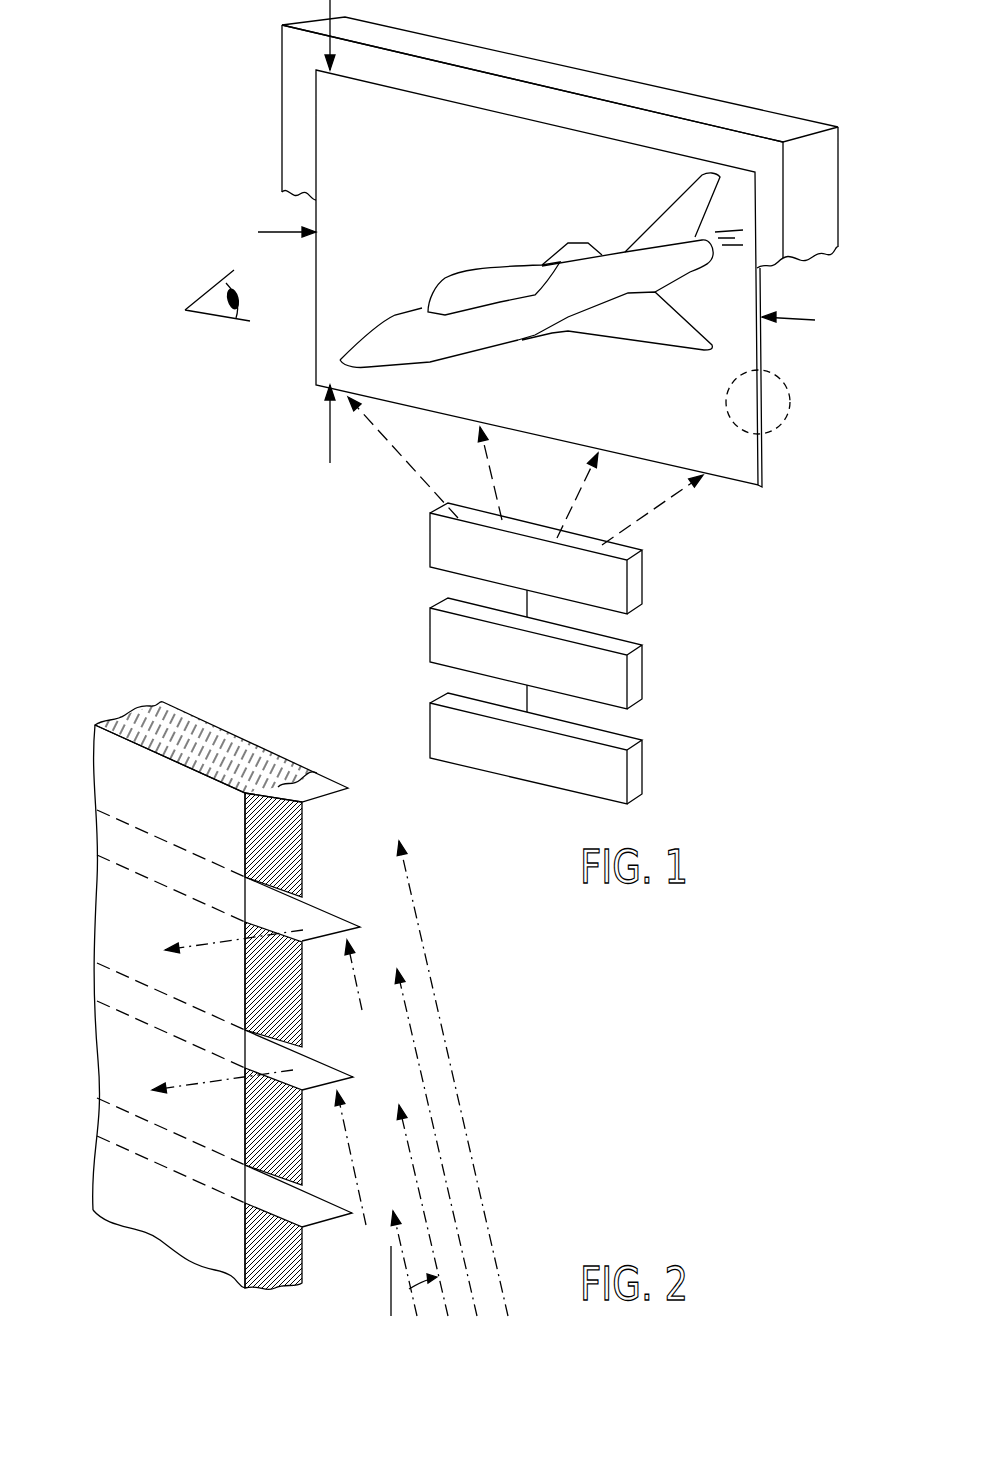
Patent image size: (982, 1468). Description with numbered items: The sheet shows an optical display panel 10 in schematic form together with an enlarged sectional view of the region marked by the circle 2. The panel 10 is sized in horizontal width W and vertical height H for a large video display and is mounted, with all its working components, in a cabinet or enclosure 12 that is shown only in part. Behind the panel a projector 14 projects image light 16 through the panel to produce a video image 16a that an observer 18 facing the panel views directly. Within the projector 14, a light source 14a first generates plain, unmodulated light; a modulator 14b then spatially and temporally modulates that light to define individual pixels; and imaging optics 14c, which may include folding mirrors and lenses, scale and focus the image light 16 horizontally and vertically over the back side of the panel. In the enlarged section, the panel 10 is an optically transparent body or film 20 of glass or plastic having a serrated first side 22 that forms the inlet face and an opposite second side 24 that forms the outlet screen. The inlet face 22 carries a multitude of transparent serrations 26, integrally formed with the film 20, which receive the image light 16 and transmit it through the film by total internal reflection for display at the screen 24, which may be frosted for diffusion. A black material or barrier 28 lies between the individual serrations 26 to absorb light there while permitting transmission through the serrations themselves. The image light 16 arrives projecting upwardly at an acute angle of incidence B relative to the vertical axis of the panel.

In FIG. 1, the optical display panel 10 is at (594, 243).
In FIG. 2, the optical display panel 10 is at (210, 962).
In FIG. 1, the cabinet or enclosure 12 is at (838, 170).
In FIG. 1, the projector 14 is at (543, 653).
In FIG. 1, the light source 14a is at (430, 745).
In FIG. 1, the modulator 14b is at (430, 640).
In FIG. 1, the imaging optics 14c is at (430, 540).
In FIG. 1, the image light 16 is at (497, 497).
In FIG. 2, the image light 16 is at (471, 1153).
In FIG. 1, the video image 16a is at (393, 312).
In FIG. 1, the observer 18 is at (205, 297).
In FIG. 2, the optically transparent body or film 20 is at (182, 727).
In FIG. 1, the serrated first side 22 is at (765, 467).
In FIG. 2, the serrated first side 22 is at (308, 979).
In FIG. 1, the second side 24 is at (500, 183).
In FIG. 2, the second side 24 is at (152, 1069).
In FIG. 2, the serrations 26 is at (327, 908).
In FIG. 2, the black material or barrier 28 is at (303, 1003).
In FIG. 1, the circle 2 is at (790, 387).
In FIG. 1, the vertical height H is at (330, 437).
In FIG. 1, the horizontal width W is at (815, 320).
In FIG. 2, the angle of incidence B is at (378, 1291).